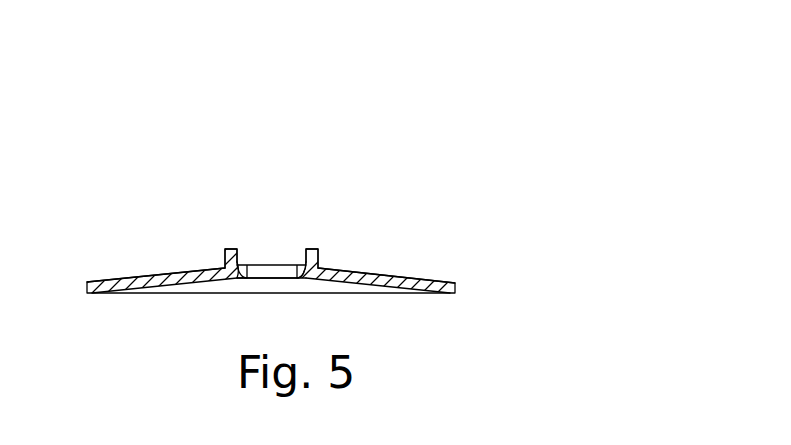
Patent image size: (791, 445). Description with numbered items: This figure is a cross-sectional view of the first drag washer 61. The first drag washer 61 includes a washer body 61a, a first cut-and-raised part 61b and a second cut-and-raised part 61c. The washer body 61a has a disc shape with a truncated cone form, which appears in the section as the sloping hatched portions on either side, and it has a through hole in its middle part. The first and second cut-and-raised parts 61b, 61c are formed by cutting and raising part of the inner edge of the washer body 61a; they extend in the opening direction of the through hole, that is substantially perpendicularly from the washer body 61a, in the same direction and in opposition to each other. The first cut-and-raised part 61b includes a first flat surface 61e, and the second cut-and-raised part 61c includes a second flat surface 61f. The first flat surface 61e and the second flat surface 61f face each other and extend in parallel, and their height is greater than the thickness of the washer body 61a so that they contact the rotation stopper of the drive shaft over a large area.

The first drag washer 61 is at (471, 118).
The washer body 61a is at (408, 272).
The first cut-and-raised part 61b is at (224, 247).
The second cut-and-raised part 61c is at (316, 247).
The first flat surface 61e is at (238, 262).
The second flat surface 61f is at (304, 260).